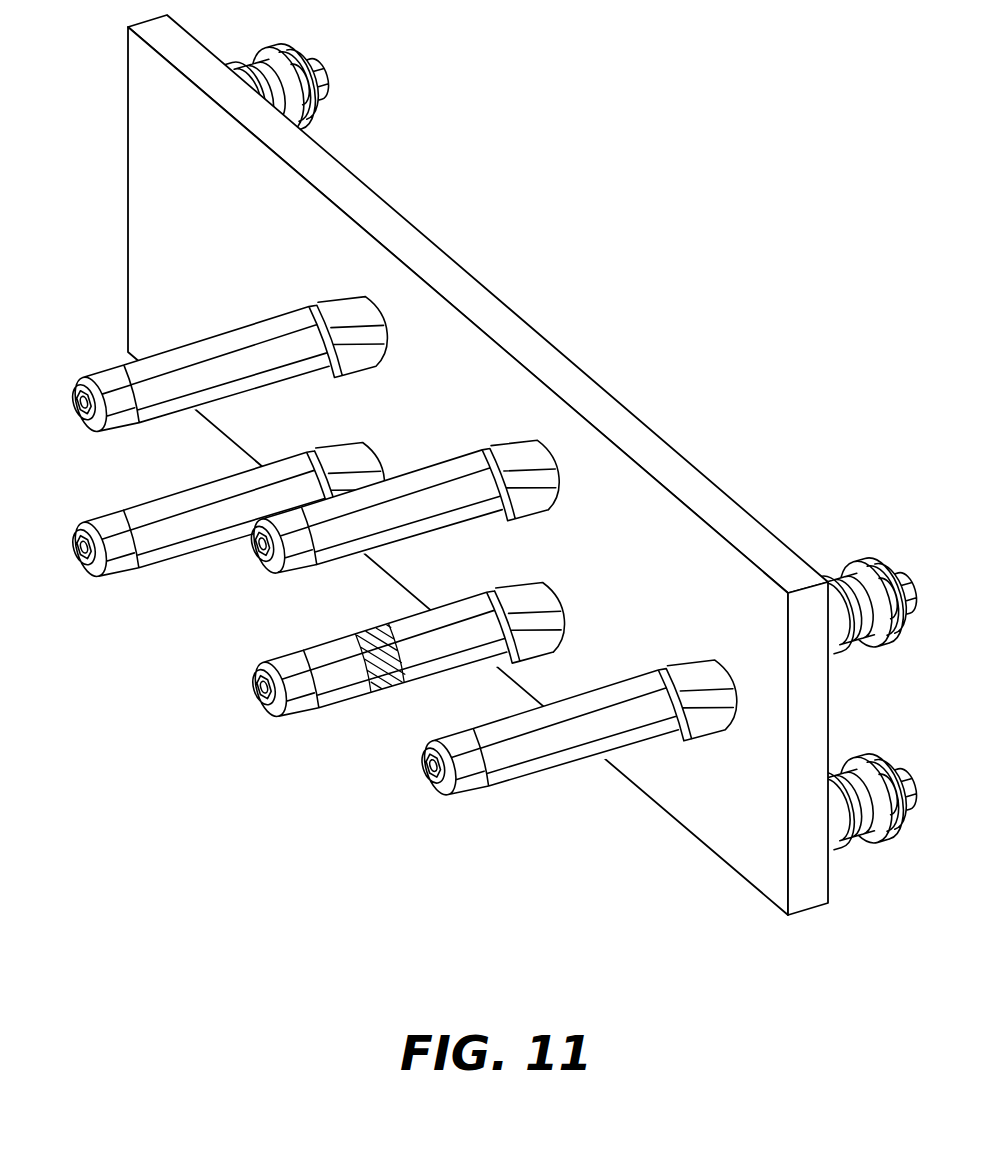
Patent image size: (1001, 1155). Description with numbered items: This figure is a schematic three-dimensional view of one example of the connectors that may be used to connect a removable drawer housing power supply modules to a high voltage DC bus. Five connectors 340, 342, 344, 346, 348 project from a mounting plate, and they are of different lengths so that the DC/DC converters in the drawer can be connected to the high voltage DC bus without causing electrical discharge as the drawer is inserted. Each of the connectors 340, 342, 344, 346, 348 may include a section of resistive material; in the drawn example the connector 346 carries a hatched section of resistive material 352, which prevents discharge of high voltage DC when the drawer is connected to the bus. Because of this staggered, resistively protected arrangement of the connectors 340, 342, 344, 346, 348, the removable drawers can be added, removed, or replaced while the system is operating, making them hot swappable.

The connector 340 is at (116, 418).
The connector 342 is at (116, 562).
The connector 344 is at (297, 560).
The connector 346 is at (296, 706).
The connector 348 is at (477, 780).
The resistive material 352 is at (378, 694).